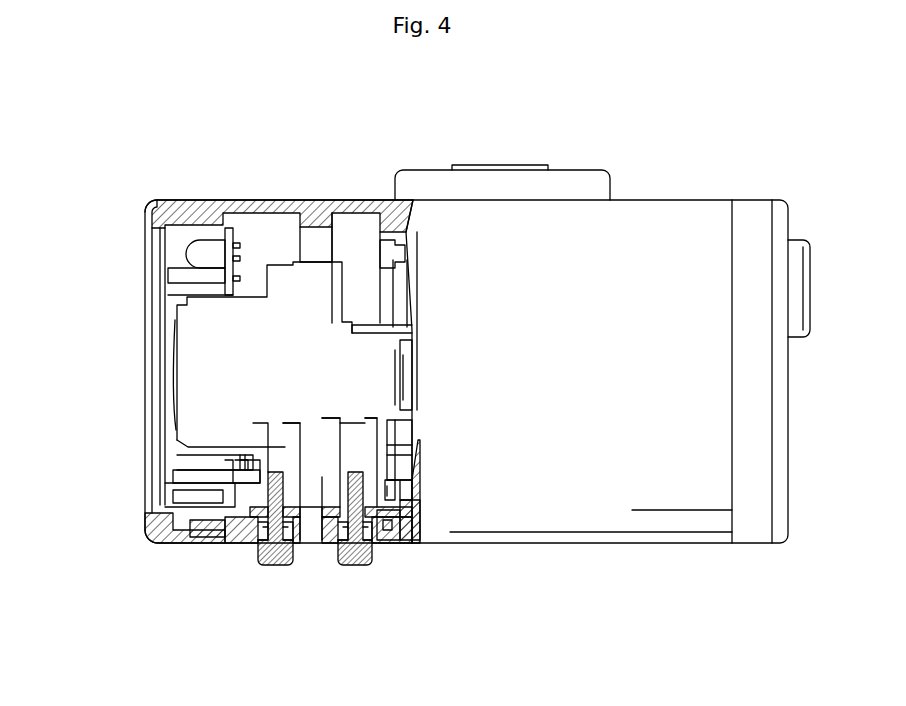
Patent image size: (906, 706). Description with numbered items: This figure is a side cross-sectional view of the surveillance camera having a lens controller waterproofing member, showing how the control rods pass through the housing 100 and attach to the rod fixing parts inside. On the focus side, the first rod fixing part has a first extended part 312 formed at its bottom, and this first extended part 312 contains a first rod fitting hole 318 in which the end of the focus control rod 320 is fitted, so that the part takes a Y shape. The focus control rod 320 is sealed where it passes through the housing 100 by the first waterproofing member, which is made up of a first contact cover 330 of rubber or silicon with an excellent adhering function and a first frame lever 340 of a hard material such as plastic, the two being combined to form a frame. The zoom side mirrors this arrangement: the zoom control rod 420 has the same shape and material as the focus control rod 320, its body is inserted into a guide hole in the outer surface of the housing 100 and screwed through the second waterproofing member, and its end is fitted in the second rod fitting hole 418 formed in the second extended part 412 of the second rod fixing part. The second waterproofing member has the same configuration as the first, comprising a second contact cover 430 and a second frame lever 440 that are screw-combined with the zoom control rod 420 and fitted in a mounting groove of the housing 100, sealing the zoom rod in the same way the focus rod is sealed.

The housing 100 is at (315, 202).
The first extended part 312 is at (217, 472).
The first rod fitting hole 318 is at (183, 540).
The focus control rod 320 is at (272, 565).
The first contact cover 330 is at (255, 508).
The first frame lever 340 is at (228, 483).
The second extended part 412 is at (422, 477).
The second rod fitting hole 418 is at (405, 445).
The zoom control rod 420 is at (350, 565).
The second contact cover 430 is at (395, 545).
The second frame lever 440 is at (385, 513).